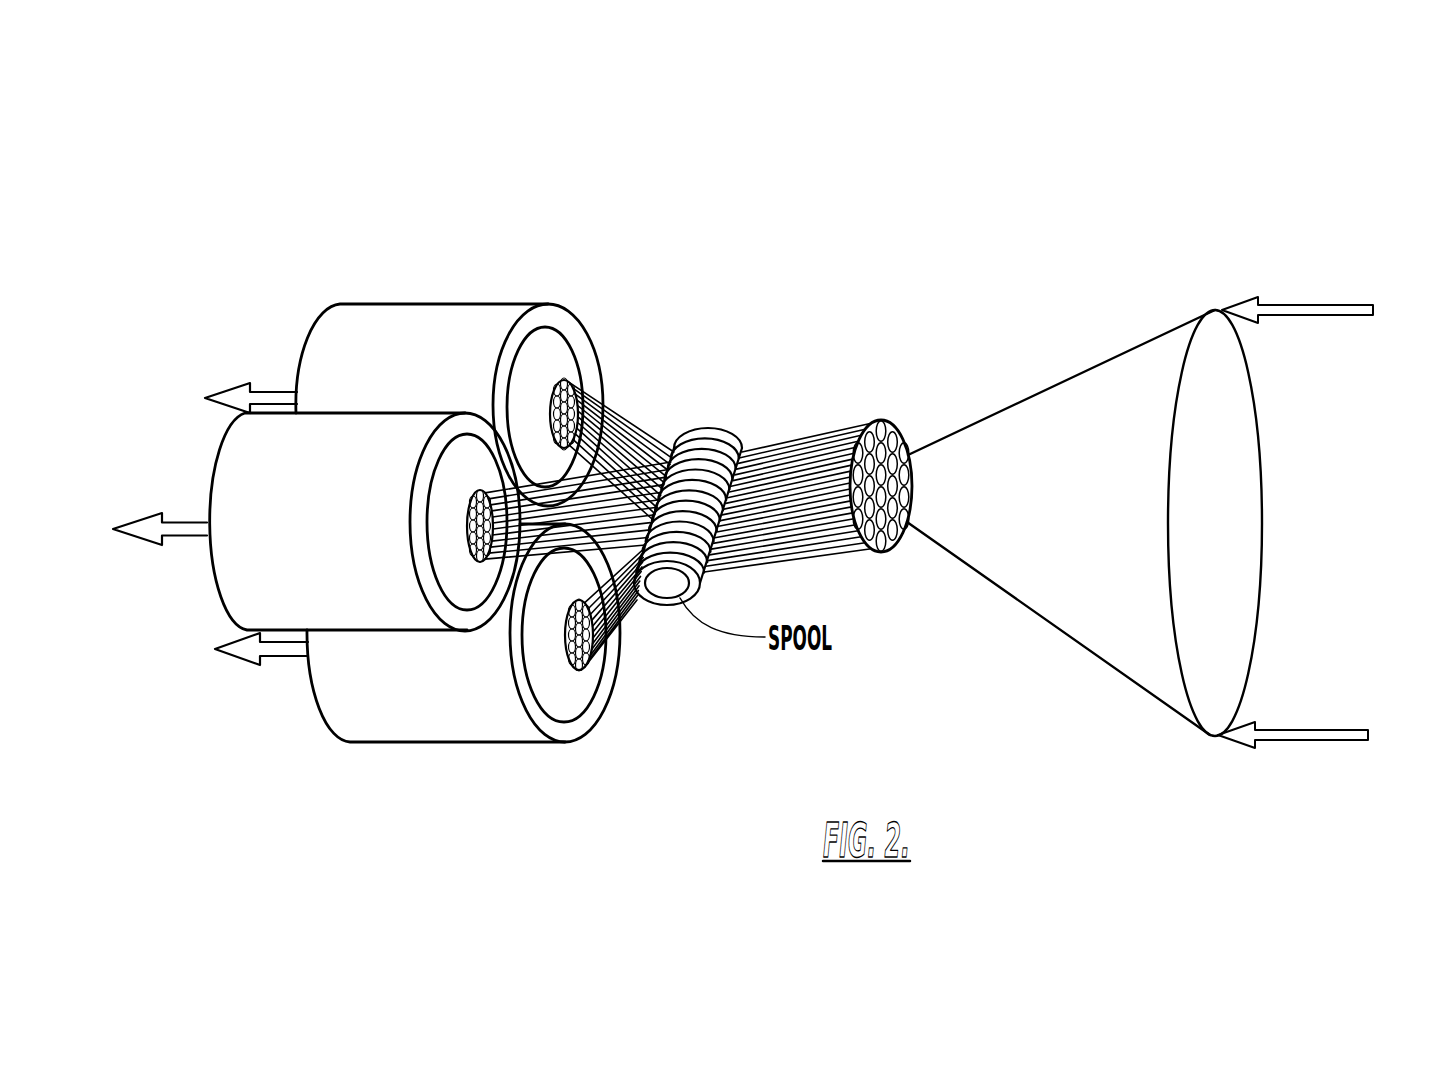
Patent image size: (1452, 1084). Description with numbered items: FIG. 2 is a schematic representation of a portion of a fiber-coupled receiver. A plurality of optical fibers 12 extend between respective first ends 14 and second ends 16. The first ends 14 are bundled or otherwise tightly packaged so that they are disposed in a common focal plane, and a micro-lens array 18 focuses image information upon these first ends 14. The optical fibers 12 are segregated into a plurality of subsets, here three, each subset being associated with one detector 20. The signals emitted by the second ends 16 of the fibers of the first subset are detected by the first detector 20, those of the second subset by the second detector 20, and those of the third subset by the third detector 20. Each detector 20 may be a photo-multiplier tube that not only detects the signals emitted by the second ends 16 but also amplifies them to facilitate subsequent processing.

The optical fibers 12 is at (788, 453).
The first ends 14 is at (908, 430).
The second ends 16 is at (580, 380).
The micro-lens array 18 is at (1230, 385).
The detector 20 is at (443, 317).